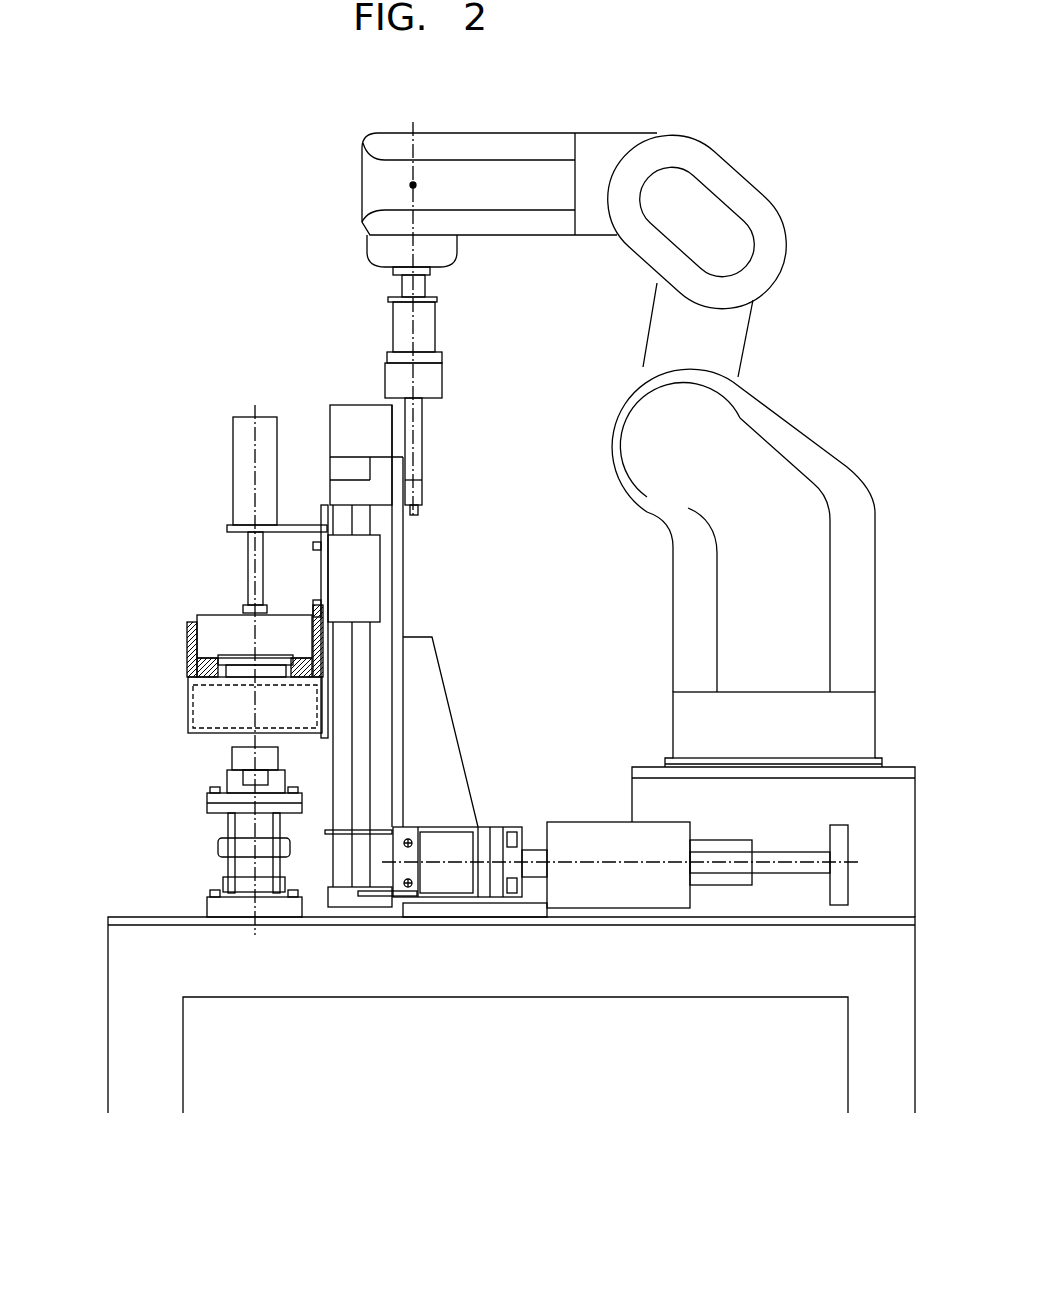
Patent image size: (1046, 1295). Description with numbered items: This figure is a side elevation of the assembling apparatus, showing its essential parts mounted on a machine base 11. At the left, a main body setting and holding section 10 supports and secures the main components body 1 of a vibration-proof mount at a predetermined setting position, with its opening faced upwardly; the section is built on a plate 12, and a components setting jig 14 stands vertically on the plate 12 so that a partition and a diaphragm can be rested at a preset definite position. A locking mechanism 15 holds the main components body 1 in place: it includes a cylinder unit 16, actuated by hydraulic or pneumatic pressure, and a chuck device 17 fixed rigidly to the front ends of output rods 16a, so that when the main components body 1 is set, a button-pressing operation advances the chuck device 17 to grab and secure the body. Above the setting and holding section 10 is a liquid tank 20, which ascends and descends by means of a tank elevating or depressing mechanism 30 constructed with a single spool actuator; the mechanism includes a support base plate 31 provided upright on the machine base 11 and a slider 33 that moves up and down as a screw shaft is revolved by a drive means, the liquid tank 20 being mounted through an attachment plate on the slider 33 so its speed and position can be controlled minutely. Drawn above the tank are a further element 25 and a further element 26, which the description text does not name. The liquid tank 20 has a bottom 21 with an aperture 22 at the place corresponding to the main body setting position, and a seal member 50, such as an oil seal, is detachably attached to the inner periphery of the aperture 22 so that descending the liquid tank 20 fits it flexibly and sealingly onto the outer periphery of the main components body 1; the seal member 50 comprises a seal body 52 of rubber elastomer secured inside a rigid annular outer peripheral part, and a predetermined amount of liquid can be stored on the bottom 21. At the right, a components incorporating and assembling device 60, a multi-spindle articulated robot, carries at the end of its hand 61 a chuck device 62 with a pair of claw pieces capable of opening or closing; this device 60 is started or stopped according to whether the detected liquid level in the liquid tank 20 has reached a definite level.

The main components body 1 is at (215, 845).
The main body setting and holding section 10 is at (198, 830).
The machine base 11 is at (142, 978).
The plate 12 is at (210, 910).
The components setting jig 14 is at (200, 790).
The locking mechanism 15 is at (516, 810).
The cylinder unit 16 is at (628, 897).
The output rods 16a is at (537, 868).
The chuck device 17 is at (373, 905).
The liquid tank 20 is at (184, 669).
The bottom 21 is at (188, 637).
The aperture 22 is at (302, 663).
The press head 25 is at (218, 623).
The air cylinder 26 is at (243, 462).
The tank elevating or depressing mechanism 30 is at (394, 623).
The support base plate 31 is at (398, 547).
The slider 33 is at (340, 553).
The seal member 50 is at (247, 653).
The seal body 52 is at (240, 677).
The components incorporating and assembling device 60 is at (778, 150).
The hand 61 is at (402, 325).
The chuck device 62 is at (417, 442).